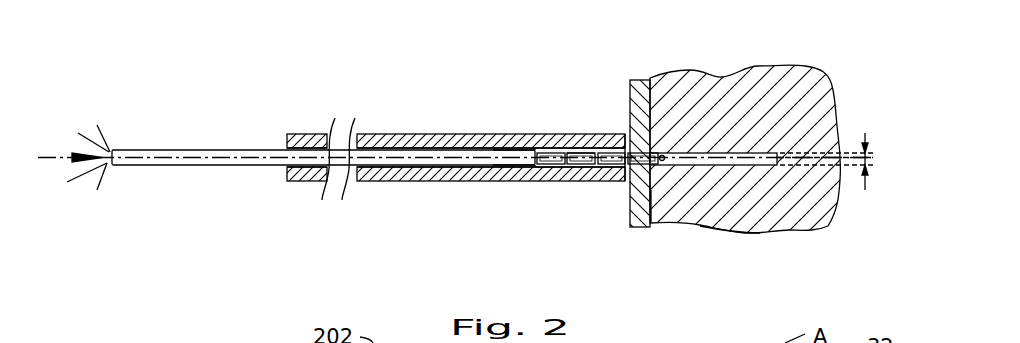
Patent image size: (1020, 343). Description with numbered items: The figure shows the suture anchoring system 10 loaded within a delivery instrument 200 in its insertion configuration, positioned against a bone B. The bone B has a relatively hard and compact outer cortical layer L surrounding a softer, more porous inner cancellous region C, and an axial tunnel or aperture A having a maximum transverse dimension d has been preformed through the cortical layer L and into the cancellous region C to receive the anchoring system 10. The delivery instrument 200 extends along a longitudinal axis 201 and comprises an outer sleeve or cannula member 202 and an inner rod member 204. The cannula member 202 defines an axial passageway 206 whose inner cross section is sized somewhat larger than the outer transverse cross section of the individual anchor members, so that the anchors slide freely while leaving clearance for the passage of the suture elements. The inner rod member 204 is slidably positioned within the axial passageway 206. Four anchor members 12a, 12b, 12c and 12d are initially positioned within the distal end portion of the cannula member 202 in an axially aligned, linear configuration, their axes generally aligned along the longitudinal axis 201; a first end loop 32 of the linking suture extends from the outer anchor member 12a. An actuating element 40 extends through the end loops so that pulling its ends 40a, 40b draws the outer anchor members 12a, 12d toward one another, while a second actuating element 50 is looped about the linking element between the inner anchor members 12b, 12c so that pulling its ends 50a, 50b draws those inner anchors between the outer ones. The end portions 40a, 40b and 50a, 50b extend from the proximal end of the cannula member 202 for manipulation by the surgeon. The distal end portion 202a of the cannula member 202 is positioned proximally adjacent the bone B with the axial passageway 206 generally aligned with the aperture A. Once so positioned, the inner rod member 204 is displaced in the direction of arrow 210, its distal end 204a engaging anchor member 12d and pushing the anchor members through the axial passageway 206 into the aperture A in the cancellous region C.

The delivery instrument 200 is at (369, 131).
The longitudinal axis 201 is at (135, 157).
The cannula member 202 is at (385, 128).
The distal end portion 202a is at (622, 126).
The inner rod member 204 is at (373, 145).
The distal end 204a is at (515, 178).
The axial passageway 206 is at (493, 155).
The arrow 210 is at (42, 157).
The suture anchoring system 10 is at (561, 163).
The anchor member 12a is at (640, 167).
The anchor member 12b is at (597, 167).
The anchor member 12c is at (560, 167).
The anchor member 12d is at (531, 167).
The actuating element 40 is at (578, 146).
The second actuating element 50 is at (557, 122).
The end 40a is at (97, 125).
The end 40b is at (78, 133).
The end 50a is at (67, 182).
The end 50b is at (97, 190).
The first end loop 32 is at (668, 165).
The aperture A is at (740, 152).
The bone B is at (840, 108).
The cancellous region C is at (790, 207).
The cortical layer L is at (651, 205).
The maximum transverse dimension d is at (836, 161).